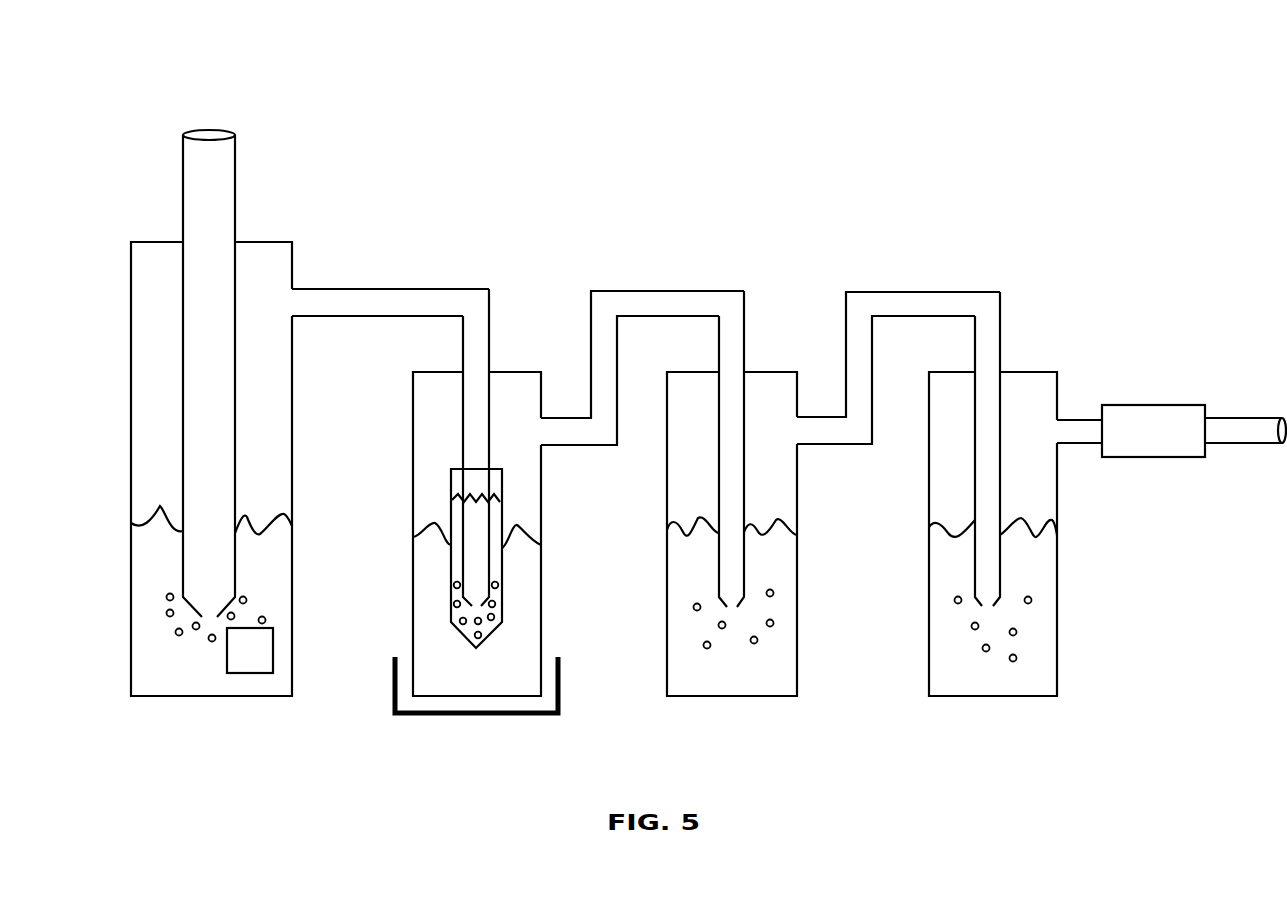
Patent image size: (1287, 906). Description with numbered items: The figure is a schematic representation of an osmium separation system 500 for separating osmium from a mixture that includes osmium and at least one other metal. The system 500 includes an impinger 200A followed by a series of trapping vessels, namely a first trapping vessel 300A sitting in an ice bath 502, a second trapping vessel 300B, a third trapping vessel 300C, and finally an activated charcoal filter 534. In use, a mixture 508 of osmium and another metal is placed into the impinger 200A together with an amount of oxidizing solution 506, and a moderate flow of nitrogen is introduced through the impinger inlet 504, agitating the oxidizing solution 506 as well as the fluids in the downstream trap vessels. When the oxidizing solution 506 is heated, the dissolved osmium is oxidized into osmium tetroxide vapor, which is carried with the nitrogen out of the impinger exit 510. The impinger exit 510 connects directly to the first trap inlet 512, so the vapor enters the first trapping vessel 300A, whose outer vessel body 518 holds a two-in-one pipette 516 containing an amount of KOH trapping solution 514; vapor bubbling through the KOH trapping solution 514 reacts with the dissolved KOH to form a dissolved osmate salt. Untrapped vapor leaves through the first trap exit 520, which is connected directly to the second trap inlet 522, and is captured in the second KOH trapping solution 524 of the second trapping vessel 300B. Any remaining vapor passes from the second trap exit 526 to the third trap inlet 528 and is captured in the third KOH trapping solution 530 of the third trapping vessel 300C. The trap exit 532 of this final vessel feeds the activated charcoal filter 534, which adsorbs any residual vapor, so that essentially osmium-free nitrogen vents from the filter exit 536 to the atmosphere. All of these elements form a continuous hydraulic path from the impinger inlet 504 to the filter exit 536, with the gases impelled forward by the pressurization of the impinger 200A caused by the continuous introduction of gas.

The osmium separation system 500 is at (735, 101).
The impinger 200A is at (180, 190).
The impinger inlet 504 is at (209, 150).
The oxidizing solution 506 is at (163, 573).
The mixture 508 is at (247, 650).
The impinger exit 510 is at (310, 303).
The first trapping vessel 300A is at (503, 270).
The first trap inlet 512 is at (477, 357).
The KOH trapping solution 514 is at (495, 618).
The two-in-one pipette 516 is at (479, 539).
The first trap vessel 518 is at (525, 613).
The ice bath 502 is at (523, 717).
The first trap exit 520 is at (562, 433).
The second trapping vessel 300B is at (739, 263).
The second trap inlet 522 is at (730, 357).
The second KOH trapping solution 524 is at (778, 665).
The second trap exit 526 is at (828, 427).
The third trapping vessel 300C is at (991, 256).
The third trap inlet 528 is at (988, 343).
The third KOH trapping solution 530 is at (1030, 665).
The trap exit 532 is at (1076, 427).
The activated charcoal filter 534 is at (1122, 432).
The filter exit 536 is at (1263, 432).